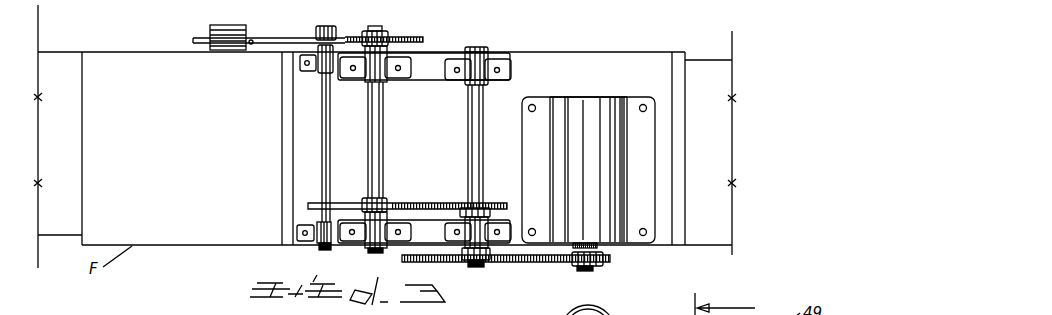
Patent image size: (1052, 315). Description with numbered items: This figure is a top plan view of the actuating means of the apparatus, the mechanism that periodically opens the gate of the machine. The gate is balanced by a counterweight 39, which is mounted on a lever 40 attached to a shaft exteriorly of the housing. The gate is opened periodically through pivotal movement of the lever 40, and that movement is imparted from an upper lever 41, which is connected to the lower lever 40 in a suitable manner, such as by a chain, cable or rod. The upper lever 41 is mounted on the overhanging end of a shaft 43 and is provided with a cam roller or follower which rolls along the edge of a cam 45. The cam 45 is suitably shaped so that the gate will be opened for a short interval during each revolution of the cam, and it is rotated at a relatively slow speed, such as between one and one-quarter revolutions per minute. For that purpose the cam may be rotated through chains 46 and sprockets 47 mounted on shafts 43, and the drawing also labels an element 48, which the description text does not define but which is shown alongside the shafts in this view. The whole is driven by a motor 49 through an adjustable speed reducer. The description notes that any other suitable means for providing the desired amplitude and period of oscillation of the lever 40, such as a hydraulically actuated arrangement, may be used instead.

The counterweight 39 is at (229, 23).
The lever 40 is at (196, 36).
The upper lever 41 is at (271, 37).
The shaft 43 is at (330, 159).
The cam 45 is at (406, 37).
The chains 46 is at (427, 206).
The sprockets 47 is at (386, 199).
The post 48 is at (385, 160).
The motor 49 is at (597, 110).